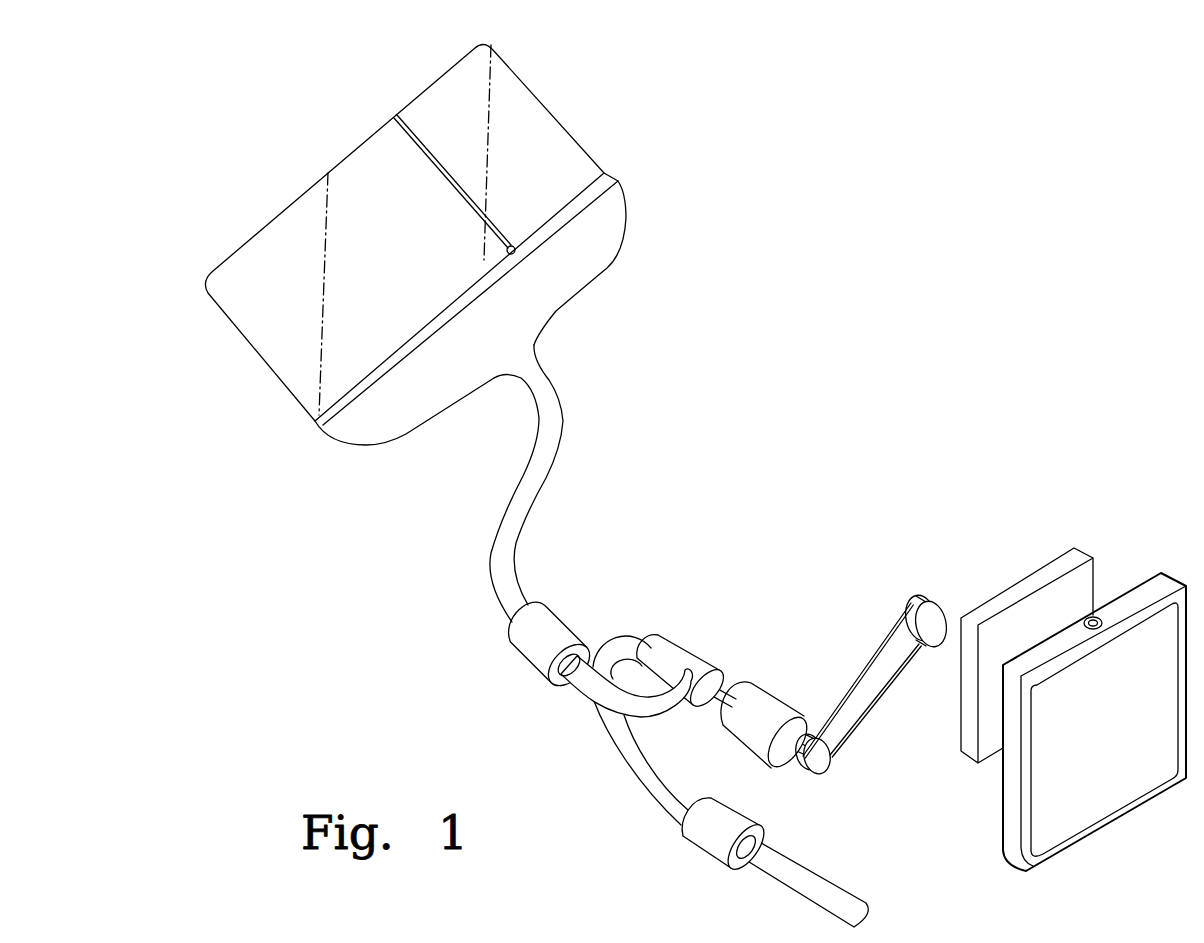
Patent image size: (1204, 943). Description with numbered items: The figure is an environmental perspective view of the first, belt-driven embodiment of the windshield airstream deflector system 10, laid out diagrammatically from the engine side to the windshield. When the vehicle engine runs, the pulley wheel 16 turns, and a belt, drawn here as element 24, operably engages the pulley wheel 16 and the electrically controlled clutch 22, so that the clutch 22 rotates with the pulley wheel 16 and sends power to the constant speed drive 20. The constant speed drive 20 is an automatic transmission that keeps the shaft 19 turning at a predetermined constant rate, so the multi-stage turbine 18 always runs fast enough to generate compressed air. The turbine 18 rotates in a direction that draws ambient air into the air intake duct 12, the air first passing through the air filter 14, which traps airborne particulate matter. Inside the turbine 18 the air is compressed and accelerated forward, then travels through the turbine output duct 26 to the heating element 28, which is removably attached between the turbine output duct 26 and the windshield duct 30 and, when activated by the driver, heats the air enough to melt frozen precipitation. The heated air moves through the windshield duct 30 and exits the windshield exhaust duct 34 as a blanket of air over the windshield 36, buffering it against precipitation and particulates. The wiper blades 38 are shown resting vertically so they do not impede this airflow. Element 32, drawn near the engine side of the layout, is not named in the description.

The windshield airstream deflector system 10 is at (968, 280).
The air intake duct 12 is at (893, 915).
The air filter 14 is at (700, 843).
The pulley wheel 16 is at (930, 626).
The multi-stage turbine 18 is at (688, 708).
The shaft 19 is at (733, 695).
The constant speed drive 20 is at (762, 743).
The electrically controlled clutch 22 is at (820, 765).
The belt 24 is at (867, 713).
The turbine output duct 26 is at (580, 685).
The heating element 28 is at (525, 640).
The windshield duct 30 is at (515, 490).
The plate assembly 32 is at (948, 437).
The windshield exhaust duct 34 is at (380, 425).
The windshield 36 is at (396, 291).
The wiper blades 38 is at (434, 158).